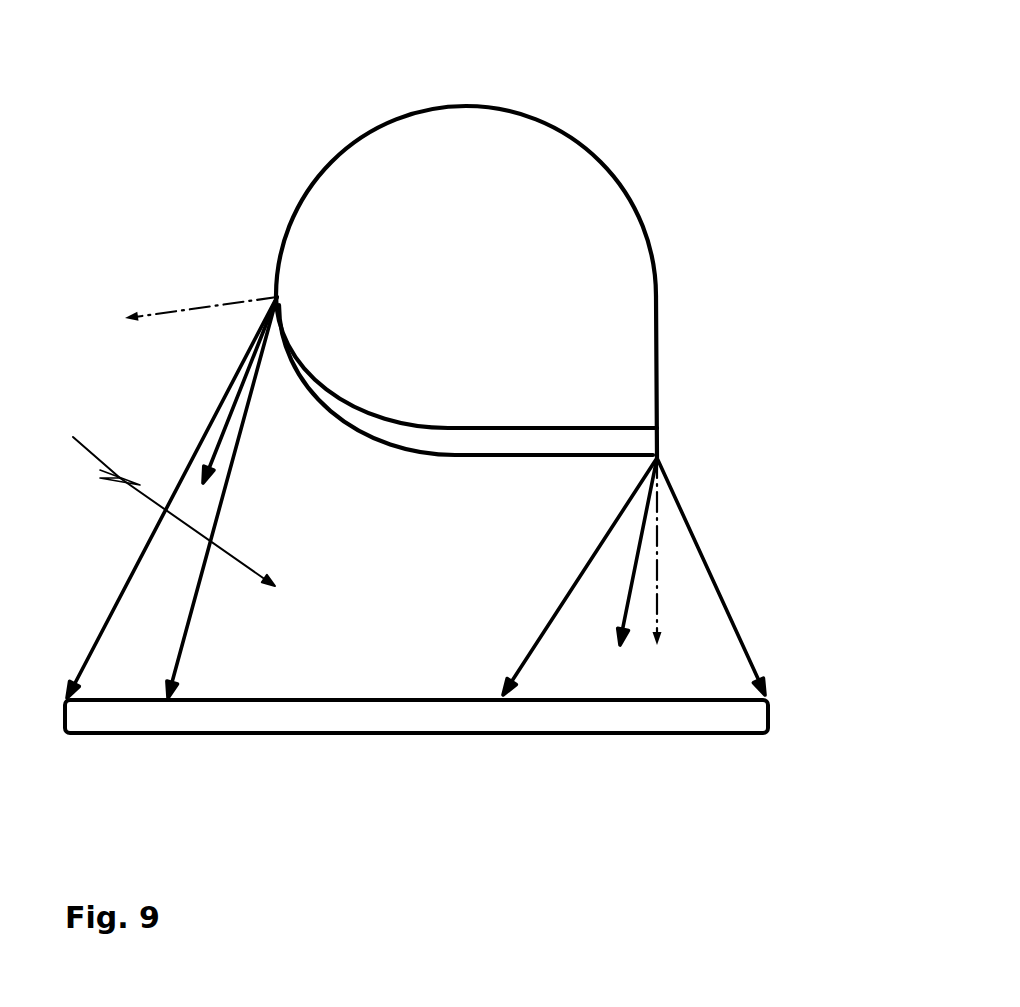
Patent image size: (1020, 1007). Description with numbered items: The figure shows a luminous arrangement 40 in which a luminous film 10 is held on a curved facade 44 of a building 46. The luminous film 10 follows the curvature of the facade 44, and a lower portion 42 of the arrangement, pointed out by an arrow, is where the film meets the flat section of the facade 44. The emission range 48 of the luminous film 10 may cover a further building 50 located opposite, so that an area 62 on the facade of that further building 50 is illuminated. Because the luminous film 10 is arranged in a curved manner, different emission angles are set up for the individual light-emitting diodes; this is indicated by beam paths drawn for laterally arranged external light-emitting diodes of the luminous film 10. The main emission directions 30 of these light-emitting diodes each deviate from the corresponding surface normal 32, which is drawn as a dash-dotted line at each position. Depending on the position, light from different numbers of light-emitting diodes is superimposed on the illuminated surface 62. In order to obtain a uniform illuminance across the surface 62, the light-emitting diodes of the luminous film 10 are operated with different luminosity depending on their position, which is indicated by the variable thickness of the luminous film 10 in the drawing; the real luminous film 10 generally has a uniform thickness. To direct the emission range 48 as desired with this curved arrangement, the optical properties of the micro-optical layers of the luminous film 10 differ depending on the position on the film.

The luminous film 10 is at (617, 443).
The main emission directions 30 is at (222, 432).
The surface normal 32 is at (172, 312).
The luminous arrangement 40 is at (553, 240).
The lower portion 42 is at (543, 393).
The curved facade 44 is at (521, 405).
The building 46 is at (528, 173).
The emission range 48 is at (158, 502).
The further building 50 is at (262, 715).
The illuminated area 62 is at (356, 716).